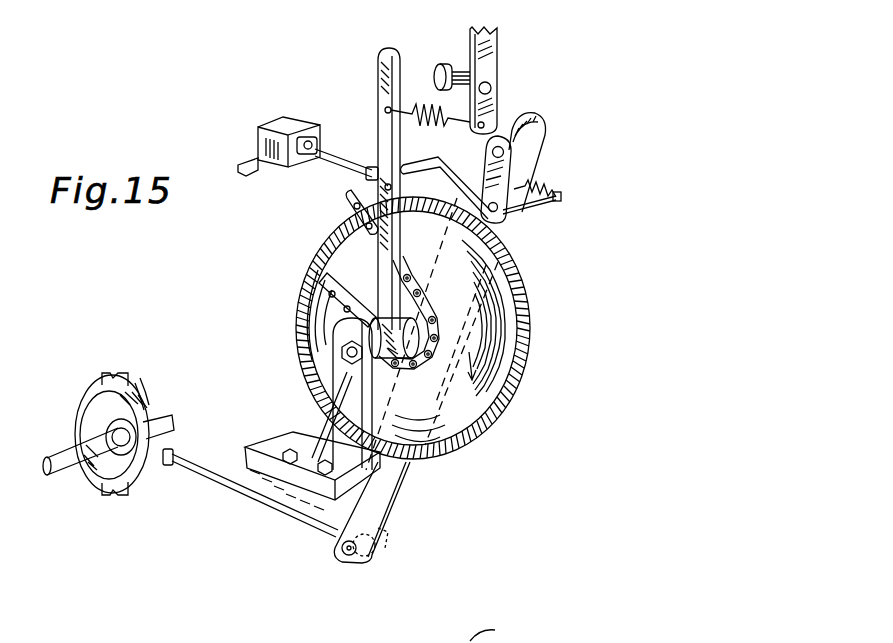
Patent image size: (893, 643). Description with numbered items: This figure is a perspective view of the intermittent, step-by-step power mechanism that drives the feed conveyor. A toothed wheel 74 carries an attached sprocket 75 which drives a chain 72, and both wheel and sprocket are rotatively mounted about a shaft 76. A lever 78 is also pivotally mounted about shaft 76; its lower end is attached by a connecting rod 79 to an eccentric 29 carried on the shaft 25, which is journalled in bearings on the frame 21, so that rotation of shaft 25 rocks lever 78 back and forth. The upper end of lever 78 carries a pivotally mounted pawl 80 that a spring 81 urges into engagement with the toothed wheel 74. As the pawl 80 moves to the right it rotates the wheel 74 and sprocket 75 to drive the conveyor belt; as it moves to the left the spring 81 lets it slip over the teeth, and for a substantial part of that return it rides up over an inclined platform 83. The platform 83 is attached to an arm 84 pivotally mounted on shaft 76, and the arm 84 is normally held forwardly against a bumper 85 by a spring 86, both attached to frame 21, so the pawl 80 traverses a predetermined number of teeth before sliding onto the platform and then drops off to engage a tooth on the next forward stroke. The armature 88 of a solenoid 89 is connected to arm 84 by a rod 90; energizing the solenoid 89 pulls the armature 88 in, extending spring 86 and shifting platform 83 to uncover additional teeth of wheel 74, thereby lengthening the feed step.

The frame 21 is at (486, 47).
The shaft 25 is at (73, 475).
The eccentric motion cam 29 is at (147, 405).
The chain 72 is at (325, 292).
The toothed wheel 74 is at (493, 324).
The sprocket 75 is at (415, 312).
The shaft 76 is at (338, 348).
The lever 78 is at (392, 493).
The connecting rod 79 is at (258, 508).
The pawl 80 is at (520, 224).
The spring 81 is at (548, 192).
The inclined platform 83 is at (455, 206).
The arm 84 is at (380, 248).
The bumper 85 is at (460, 68).
The spring 86 is at (420, 108).
The armature 88 is at (305, 156).
The solenoid 89 is at (288, 126).
The rod 90 is at (340, 160).